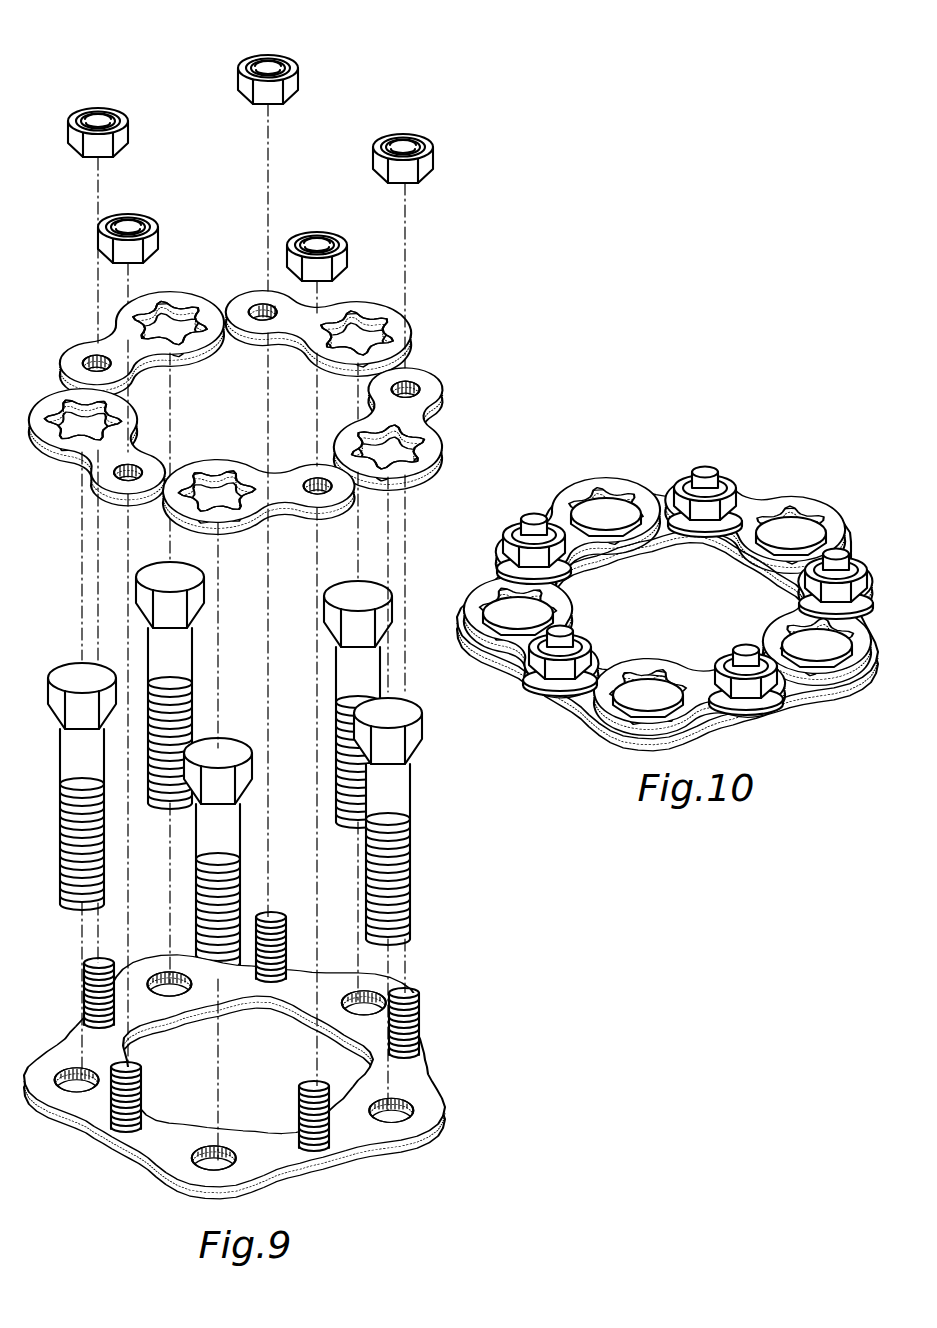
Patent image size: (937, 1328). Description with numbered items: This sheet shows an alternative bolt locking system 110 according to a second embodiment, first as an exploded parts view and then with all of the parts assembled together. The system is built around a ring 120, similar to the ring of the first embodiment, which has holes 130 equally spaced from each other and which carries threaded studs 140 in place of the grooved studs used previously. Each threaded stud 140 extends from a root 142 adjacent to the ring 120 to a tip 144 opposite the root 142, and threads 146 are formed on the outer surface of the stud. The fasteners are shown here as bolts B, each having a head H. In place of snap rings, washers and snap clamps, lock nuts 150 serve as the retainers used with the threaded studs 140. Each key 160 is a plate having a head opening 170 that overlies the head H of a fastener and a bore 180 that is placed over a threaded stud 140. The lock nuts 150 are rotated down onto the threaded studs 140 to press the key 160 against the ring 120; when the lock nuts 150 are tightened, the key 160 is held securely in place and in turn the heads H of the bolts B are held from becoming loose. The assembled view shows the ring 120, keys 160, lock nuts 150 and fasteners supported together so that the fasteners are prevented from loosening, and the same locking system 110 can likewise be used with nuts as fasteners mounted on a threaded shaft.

In FIG. 9, the bolt locking system 110 is at (135, 64).
In FIG. 10, the bolt locking system 110 is at (795, 419).
In FIG. 9, the ring 120 is at (234, 1082).
In FIG. 10, the ring 120 is at (828, 700).
In FIG. 9, the holes 130 is at (165, 975).
In FIG. 9, the threaded studs 140 is at (90, 1101).
In FIG. 9, the root 142 is at (122, 1140).
In FIG. 9, the tip 144 is at (250, 1021).
In FIG. 10, the tip 144 is at (533, 505).
In FIG. 9, the threads 146 is at (278, 958).
In FIG. 10, the threads 146 is at (518, 548).
In FIG. 9, the lock nuts 150 is at (118, 112).
In FIG. 10, the lock nuts 150 is at (725, 490).
In FIG. 9, the key 160 is at (207, 300).
In FIG. 10, the key 160 is at (592, 490).
In FIG. 9, the head opening 170 is at (170, 308).
In FIG. 9, the bore 180 is at (97, 355).
In FIG. 9, the head H is at (190, 583).
In FIG. 10, the head H is at (615, 505).
In FIG. 9, the bolt B is at (190, 650).